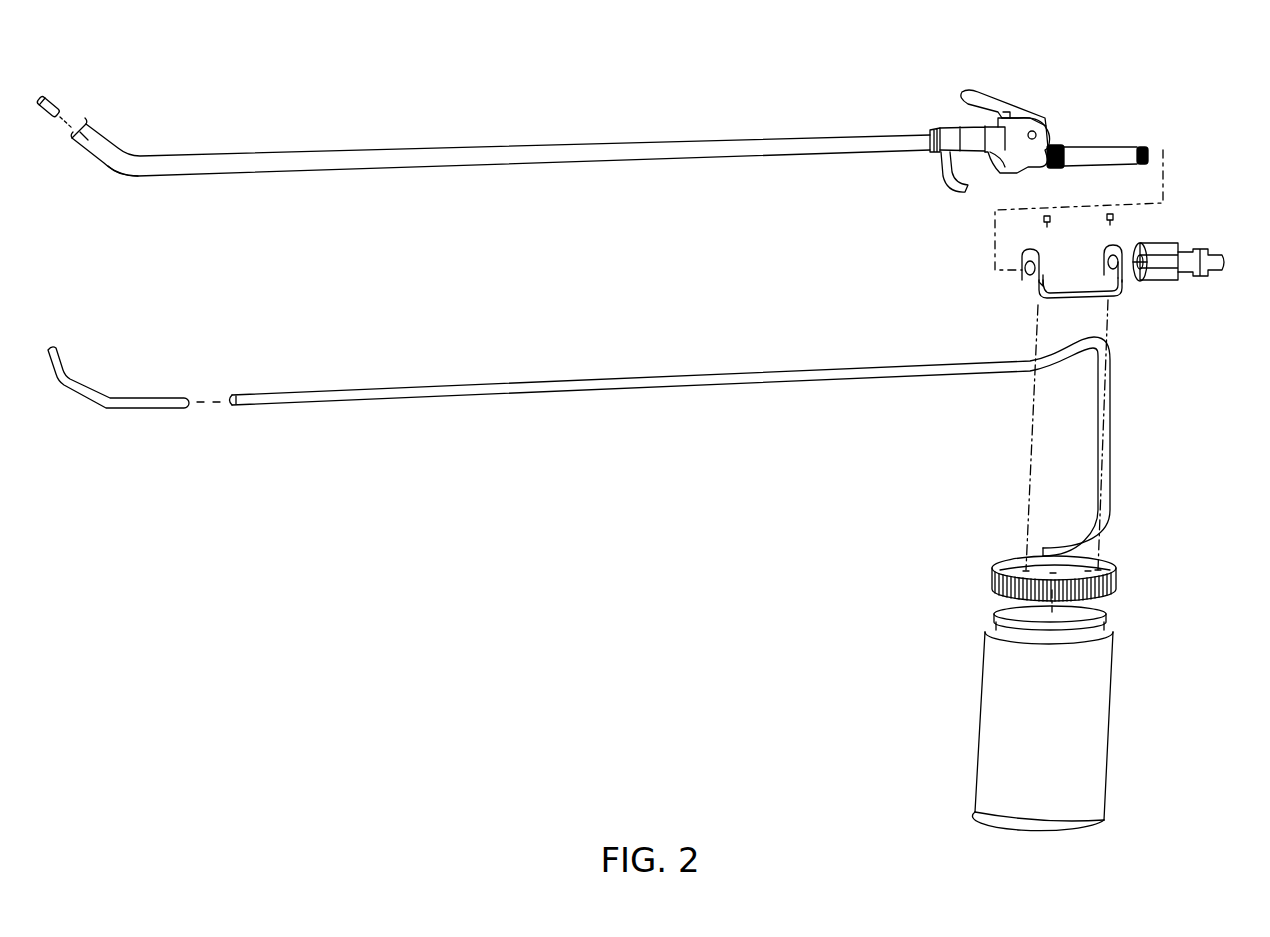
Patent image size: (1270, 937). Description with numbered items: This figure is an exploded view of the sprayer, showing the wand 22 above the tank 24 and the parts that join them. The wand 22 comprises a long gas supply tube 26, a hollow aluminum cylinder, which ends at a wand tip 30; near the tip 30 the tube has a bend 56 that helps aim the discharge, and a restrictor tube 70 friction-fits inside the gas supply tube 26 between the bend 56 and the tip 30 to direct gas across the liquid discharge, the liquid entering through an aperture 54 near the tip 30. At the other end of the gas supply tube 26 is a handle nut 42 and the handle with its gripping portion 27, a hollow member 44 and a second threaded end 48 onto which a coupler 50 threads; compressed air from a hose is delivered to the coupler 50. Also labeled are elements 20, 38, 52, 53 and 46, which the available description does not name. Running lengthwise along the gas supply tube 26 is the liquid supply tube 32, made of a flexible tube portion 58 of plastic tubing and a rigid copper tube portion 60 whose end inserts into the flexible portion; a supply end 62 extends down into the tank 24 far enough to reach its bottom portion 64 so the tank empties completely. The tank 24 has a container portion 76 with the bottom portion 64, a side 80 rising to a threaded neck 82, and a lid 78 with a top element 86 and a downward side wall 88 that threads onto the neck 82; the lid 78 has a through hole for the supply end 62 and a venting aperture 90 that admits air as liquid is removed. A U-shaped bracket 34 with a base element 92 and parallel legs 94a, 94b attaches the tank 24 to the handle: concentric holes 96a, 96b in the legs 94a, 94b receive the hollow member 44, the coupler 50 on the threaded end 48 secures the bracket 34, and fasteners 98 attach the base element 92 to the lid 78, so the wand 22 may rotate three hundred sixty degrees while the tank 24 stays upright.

The air gun assembly 20 is at (815, 64).
The wand 22 is at (483, 147).
The gas supply tube 26 is at (292, 162).
The wand tip 30 is at (88, 135).
The restrictor tube 70 is at (58, 100).
The aperture 54 is at (80, 160).
The bend 56 is at (128, 175).
The blow gun 38 is at (1044, 139).
The handle nut 42 is at (930, 147).
The lever 52 is at (976, 92).
The pivot 53 is at (1008, 113).
The inlet coupling 46 is at (1054, 145).
The hollow member 44 is at (1105, 153).
The second threaded end 48 is at (1150, 150).
The gripping portion 27 is at (988, 160).
The hole 96a is at (1023, 277).
The hole 96b is at (1135, 237).
The coupler 50 is at (1178, 257).
The fasteners 98 is at (1050, 227).
The leg 94a is at (1025, 295).
The leg 94b is at (1122, 285).
The U-shaped bracket 34 is at (1054, 295).
The base element 92 is at (1092, 300).
The flexible tube portion 58 is at (605, 387).
The rigid tube portion 60 is at (110, 405).
The liquid supply tube 32 is at (579, 446).
The tank 24 is at (1046, 671).
The supply end 62 is at (1056, 543).
The side wall 88 is at (1098, 570).
The top element 86 is at (1118, 568).
The lid 78 is at (1052, 572).
The venting aperture 90 is at (1040, 572).
The threaded neck 82 is at (996, 630).
The side 80 is at (990, 735).
The container portion 76 is at (1052, 730).
The bottom portion 64 is at (1092, 820).